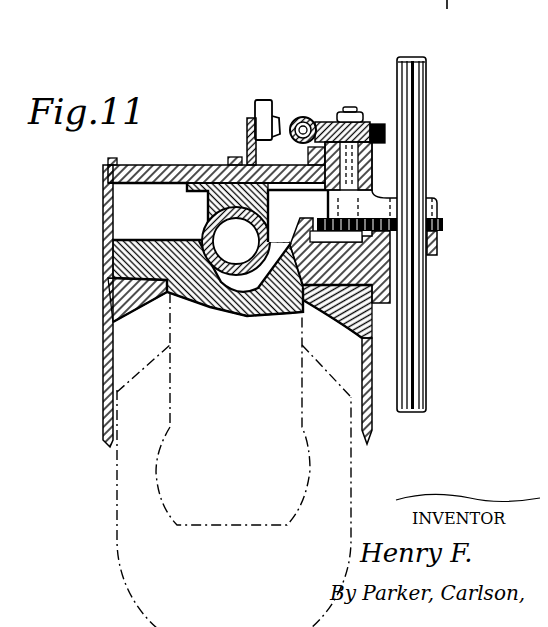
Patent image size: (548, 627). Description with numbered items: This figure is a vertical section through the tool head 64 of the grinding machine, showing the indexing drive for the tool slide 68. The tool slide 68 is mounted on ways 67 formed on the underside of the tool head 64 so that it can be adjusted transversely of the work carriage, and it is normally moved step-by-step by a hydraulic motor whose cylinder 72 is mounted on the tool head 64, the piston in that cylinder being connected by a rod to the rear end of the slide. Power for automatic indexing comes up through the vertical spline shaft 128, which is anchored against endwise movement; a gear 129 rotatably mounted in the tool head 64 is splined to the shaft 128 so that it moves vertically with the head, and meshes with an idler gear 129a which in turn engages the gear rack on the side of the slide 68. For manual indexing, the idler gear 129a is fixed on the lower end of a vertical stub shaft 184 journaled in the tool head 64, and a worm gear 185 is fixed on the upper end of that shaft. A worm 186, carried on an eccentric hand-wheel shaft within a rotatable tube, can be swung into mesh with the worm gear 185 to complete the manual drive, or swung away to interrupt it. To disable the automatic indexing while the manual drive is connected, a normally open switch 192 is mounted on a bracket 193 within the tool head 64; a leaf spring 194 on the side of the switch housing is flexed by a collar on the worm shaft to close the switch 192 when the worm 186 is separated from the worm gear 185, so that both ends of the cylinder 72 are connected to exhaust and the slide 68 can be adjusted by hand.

The tool head 64 is at (128, 300).
The ways 67 is at (130, 252).
The tool slide 68 is at (200, 305).
The cylinder 72 is at (210, 228).
The vertical spline shaft 128 is at (427, 170).
The gear 129 is at (445, 229).
The idler gear 129a is at (298, 216).
The vertical stub shaft 184 is at (323, 148).
The worm gear 185 is at (388, 108).
The worm 186 is at (313, 121).
The switch 192 is at (265, 100).
The bracket 193 is at (247, 137).
The leaf spring 194 is at (283, 126).